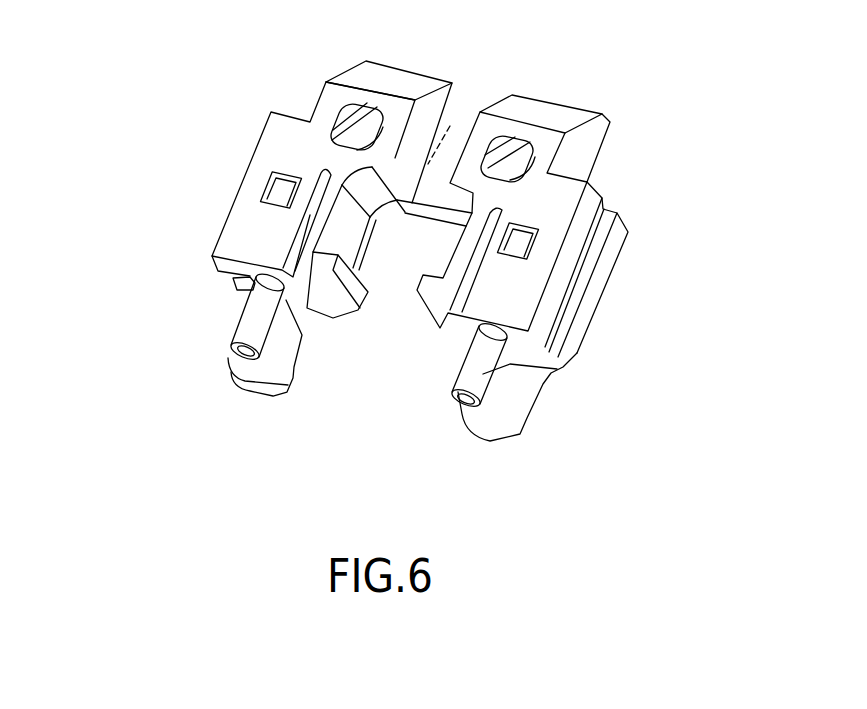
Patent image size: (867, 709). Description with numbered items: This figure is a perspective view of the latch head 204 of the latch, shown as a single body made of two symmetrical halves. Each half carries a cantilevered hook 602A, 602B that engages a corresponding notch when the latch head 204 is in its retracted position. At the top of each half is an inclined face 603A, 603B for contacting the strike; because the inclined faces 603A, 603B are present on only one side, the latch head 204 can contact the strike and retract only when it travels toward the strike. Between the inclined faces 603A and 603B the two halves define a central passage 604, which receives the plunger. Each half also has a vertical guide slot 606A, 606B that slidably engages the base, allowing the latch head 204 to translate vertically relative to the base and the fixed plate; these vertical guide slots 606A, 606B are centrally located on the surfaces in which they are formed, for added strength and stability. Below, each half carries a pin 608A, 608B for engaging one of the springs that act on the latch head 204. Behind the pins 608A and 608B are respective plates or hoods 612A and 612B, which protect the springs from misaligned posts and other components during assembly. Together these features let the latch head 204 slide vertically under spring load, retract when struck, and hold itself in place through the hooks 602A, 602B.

The latch head 204 is at (645, 70).
The cantilevered hook 602A is at (313, 267).
The cantilevered hook 602B is at (427, 297).
The inclined face 603A is at (390, 76).
The inclined face 603B is at (545, 112).
The central passage 604 is at (467, 108).
The vertical guide slot 606A is at (231, 285).
The vertical guide slot 606B is at (580, 277).
The pin 608A is at (255, 323).
The pin 608B is at (482, 373).
The plate or hood 612A is at (262, 373).
The plate or hood 612B is at (522, 380).